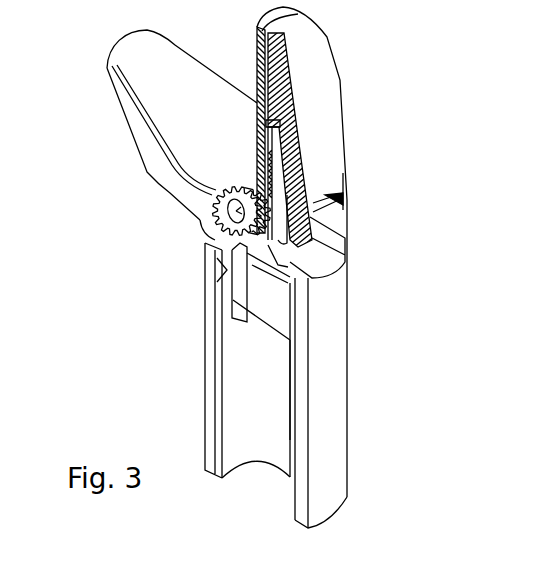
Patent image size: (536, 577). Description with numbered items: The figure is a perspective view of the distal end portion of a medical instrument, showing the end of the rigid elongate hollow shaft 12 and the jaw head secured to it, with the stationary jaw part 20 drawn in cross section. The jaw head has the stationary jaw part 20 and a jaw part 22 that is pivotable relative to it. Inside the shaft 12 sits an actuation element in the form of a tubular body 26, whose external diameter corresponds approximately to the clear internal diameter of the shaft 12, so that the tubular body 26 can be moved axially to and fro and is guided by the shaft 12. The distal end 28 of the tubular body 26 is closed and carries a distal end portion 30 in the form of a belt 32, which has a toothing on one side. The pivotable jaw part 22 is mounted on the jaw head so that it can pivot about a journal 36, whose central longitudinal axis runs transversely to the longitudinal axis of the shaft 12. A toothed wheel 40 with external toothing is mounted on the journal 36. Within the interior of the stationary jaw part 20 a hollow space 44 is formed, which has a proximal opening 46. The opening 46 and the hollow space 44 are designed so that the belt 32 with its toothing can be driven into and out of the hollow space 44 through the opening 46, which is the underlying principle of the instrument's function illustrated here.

The shaft 12 is at (332, 368).
The stationary jaw part 20 is at (313, 46).
The pivotable jaw part 22 is at (135, 64).
The tubular body 26 is at (257, 463).
The distal end 28 is at (268, 313).
The distal end portion 30 is at (237, 292).
The belt 32 is at (278, 172).
The journal 36 is at (230, 213).
The toothed wheel 40 is at (222, 203).
The hollow space 44 is at (277, 100).
The proximal opening 46 is at (320, 207).